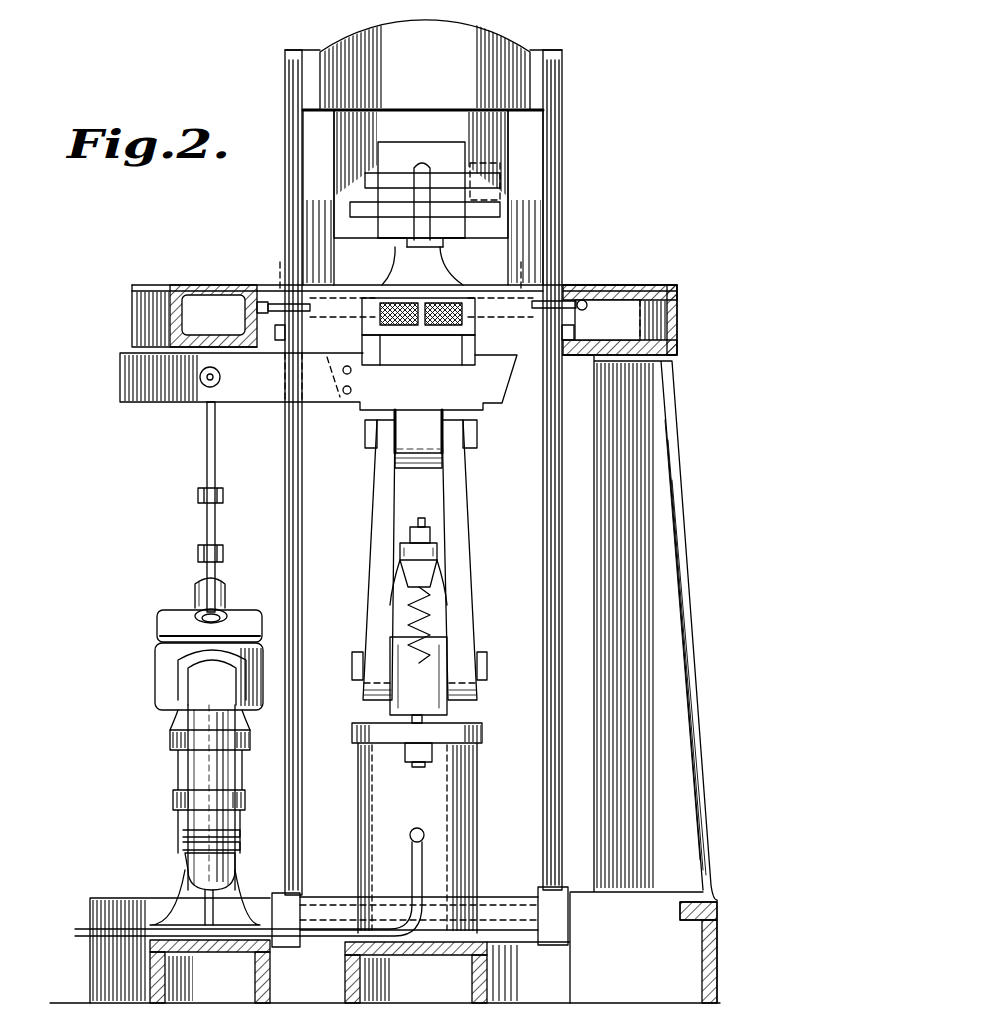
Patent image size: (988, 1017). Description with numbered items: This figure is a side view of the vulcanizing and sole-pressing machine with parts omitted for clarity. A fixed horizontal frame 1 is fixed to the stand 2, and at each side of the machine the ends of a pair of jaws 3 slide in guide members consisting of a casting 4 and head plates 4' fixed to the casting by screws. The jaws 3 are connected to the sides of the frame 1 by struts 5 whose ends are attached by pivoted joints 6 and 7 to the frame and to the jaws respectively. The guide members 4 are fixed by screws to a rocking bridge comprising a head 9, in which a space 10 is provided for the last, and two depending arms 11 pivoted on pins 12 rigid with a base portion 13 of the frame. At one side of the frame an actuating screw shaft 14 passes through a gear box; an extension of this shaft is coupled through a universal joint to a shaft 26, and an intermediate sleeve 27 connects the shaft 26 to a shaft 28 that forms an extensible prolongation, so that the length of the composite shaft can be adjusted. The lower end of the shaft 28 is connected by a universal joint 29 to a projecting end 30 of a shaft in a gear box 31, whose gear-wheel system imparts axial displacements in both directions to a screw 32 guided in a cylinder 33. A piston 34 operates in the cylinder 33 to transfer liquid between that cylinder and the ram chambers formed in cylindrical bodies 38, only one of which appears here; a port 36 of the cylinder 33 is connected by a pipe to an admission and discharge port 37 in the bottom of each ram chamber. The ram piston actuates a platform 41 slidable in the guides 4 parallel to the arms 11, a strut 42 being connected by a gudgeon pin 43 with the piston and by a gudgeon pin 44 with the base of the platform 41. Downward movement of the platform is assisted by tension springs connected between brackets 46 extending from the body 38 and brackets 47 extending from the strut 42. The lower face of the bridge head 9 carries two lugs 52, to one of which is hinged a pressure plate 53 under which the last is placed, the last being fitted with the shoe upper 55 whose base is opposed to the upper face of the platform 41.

The fixed horizontal frame 1 is at (677, 318).
The stand 2 is at (690, 542).
The jaws 3 is at (318, 290).
The casting 4 is at (319, 385).
The head plates 4' is at (425, 268).
The struts 5 is at (258, 298).
The pivoted joint 6 is at (590, 306).
The pivoted joint 7 is at (280, 282).
The head 9 is at (485, 34).
The space 10 is at (392, 236).
The depending arms 11 is at (291, 183).
The pins 12 is at (510, 945).
The base portion 13 is at (487, 982).
The actuating screw shaft 14 is at (204, 388).
The shaft 26 is at (207, 454).
The intermediate sleeve 27 is at (207, 518).
The shaft 28 is at (204, 572).
The universal joint 29 is at (180, 612).
The projecting end 30 is at (195, 622).
The gear box 31 is at (160, 665).
The screw 32 is at (196, 598).
The cylinder 33 is at (236, 778).
The piston 34 is at (172, 772).
The port 36 is at (200, 880).
The admission and discharge port 37 is at (426, 836).
The cylindrical bodies 38 is at (372, 838).
The platform 41 is at (418, 360).
The strut 42 is at (470, 596).
The gudgeon pin 43 is at (486, 668).
The gudgeon pin 44 is at (366, 452).
The brackets 46 is at (440, 752).
The brackets 47 is at (437, 550).
The lugs 52 is at (347, 123).
The pressure plate 53 is at (357, 200).
The shoe upper 55 is at (398, 258).